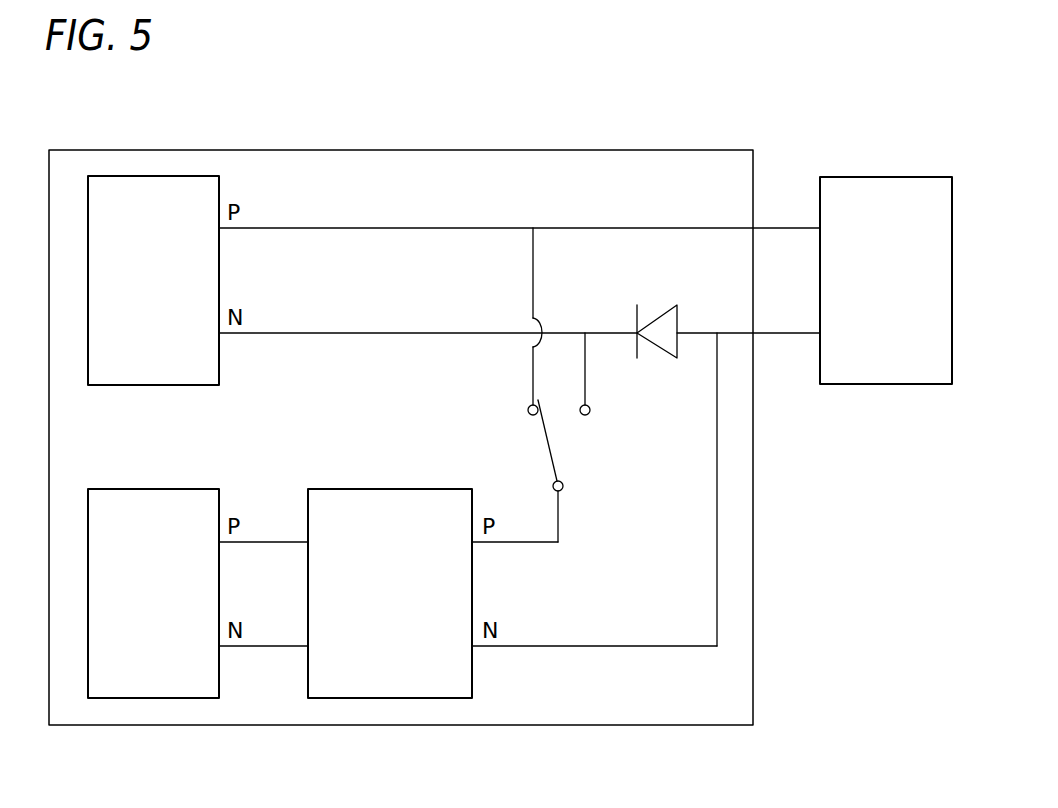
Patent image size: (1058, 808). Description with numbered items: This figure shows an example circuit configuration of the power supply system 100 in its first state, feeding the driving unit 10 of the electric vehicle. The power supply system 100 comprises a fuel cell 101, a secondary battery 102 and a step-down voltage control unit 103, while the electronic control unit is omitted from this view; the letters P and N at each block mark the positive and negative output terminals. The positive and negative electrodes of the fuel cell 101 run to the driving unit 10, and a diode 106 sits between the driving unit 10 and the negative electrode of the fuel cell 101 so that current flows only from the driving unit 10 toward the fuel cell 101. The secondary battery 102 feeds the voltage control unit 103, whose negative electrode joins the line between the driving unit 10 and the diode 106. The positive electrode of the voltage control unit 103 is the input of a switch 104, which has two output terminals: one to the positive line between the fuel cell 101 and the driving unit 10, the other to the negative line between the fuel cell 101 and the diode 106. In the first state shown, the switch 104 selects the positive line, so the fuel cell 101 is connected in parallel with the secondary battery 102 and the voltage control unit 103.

The power supply system 100 is at (502, 150).
The fuel cell 101 is at (152, 176).
The secondary battery 102 is at (150, 489).
The voltage control unit 103 is at (389, 489).
The switch 104 is at (565, 485).
The diode 106 is at (663, 352).
The driving unit 10 is at (886, 177).